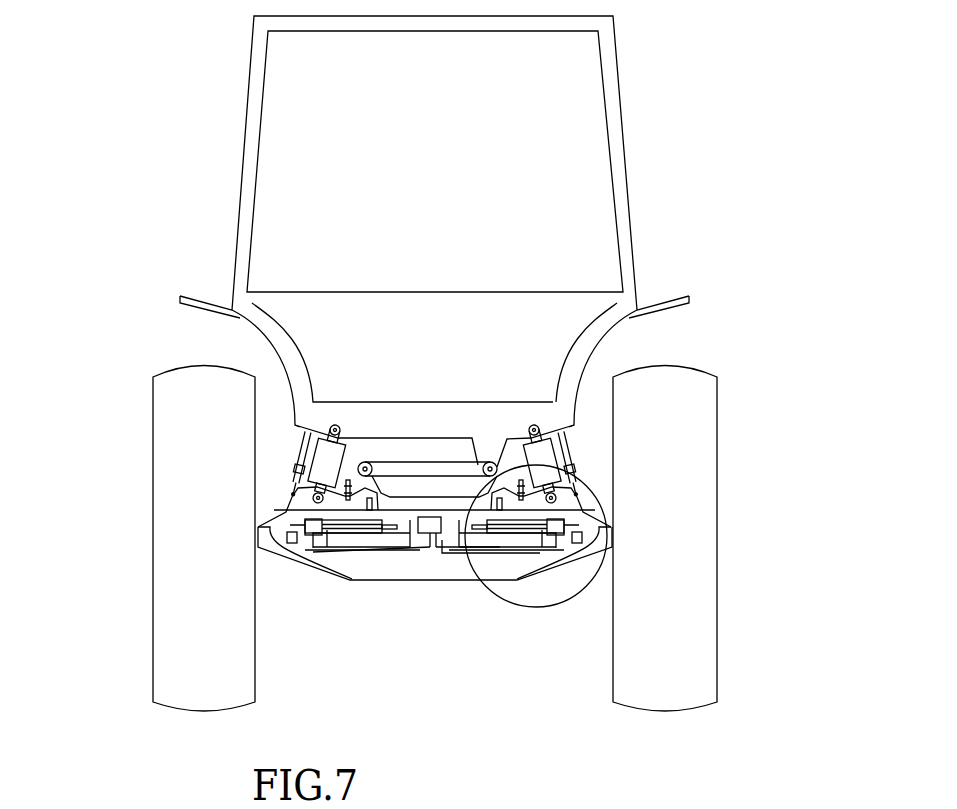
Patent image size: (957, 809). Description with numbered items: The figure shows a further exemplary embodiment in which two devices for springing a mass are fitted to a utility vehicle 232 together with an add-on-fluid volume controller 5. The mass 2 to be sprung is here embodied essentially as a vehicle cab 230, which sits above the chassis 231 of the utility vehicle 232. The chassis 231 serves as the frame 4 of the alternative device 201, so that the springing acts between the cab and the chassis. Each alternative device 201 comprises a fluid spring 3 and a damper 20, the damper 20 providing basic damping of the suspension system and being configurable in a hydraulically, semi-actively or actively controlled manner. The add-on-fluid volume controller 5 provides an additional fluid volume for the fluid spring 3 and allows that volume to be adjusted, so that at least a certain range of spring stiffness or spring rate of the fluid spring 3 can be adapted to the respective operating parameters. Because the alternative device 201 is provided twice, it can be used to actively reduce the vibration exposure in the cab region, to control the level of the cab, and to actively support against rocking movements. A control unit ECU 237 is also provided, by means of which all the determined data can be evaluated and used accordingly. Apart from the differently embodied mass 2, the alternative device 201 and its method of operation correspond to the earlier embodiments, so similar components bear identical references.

The mass 2 is at (685, 163).
The fluid spring 3 is at (543, 450).
The frame 4 is at (460, 570).
The add-on-fluid volume controller 5 is at (525, 553).
The damper 20 is at (570, 468).
The alternative device 201 is at (504, 628).
The vehicle cab 230 is at (403, 104).
The chassis 231 is at (748, 430).
The utility vehicle 232 is at (155, 323).
The control unit ECU 237 is at (432, 528).